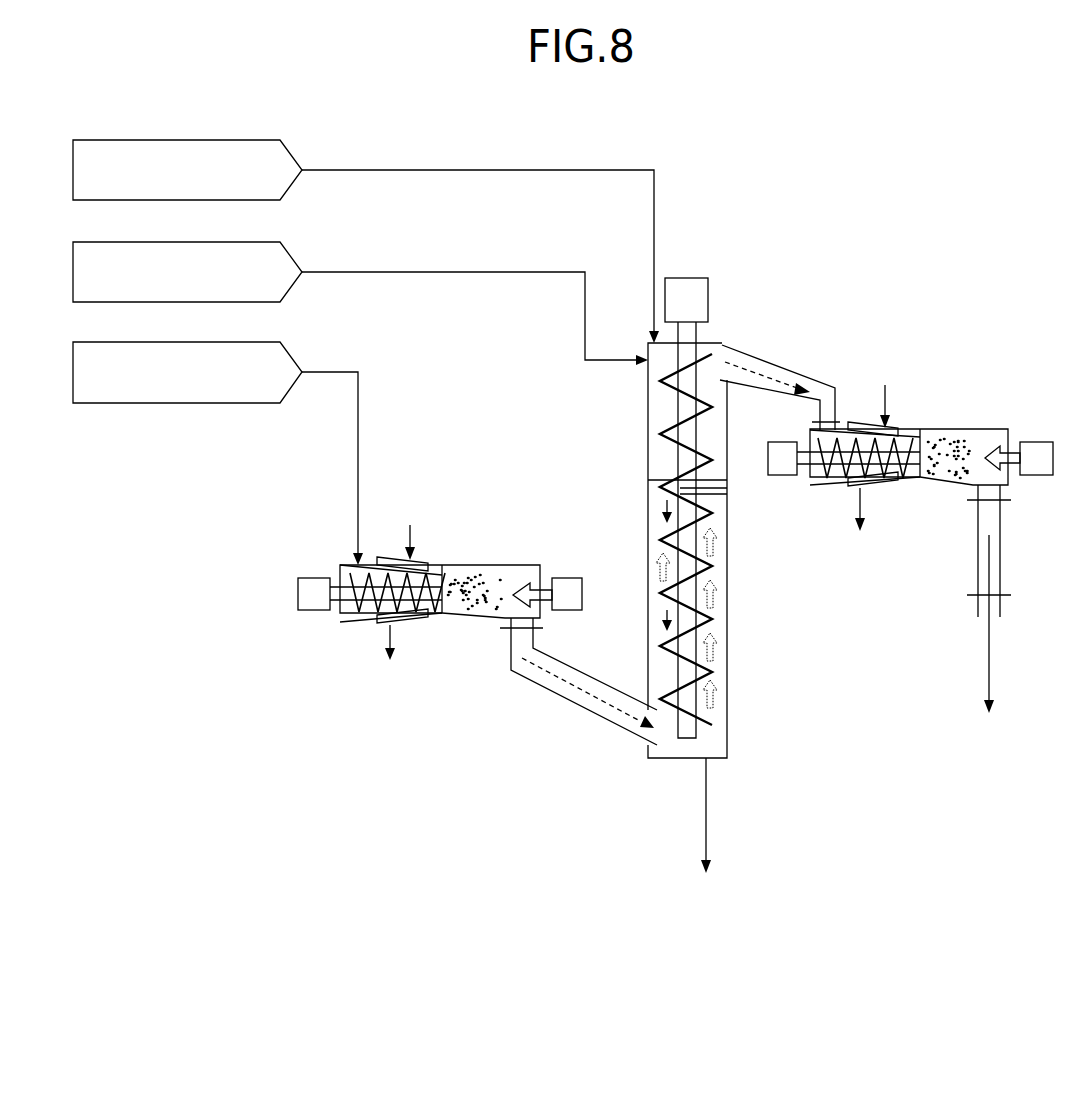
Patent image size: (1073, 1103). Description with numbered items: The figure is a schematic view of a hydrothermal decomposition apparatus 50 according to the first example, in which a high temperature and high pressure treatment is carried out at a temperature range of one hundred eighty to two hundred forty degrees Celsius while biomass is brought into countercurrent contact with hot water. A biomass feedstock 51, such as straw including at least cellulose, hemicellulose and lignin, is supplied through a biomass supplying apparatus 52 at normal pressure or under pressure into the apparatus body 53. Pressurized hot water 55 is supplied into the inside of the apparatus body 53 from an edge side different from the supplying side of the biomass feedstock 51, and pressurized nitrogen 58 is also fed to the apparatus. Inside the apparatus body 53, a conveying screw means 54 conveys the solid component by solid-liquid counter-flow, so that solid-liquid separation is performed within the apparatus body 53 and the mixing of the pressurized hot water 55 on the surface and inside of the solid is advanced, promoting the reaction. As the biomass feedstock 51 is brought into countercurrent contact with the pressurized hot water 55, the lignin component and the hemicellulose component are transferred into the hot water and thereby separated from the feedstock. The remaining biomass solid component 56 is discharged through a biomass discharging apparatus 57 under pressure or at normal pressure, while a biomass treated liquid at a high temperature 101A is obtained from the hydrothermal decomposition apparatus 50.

The hydrothermal decomposition apparatus 50 is at (858, 233).
The biomass feedstock 51 is at (241, 342).
The biomass supplying apparatus 52 is at (315, 548).
The apparatus body 53 is at (728, 655).
The conveying screw means 54 is at (708, 356).
The pressurized hot water 55 is at (241, 242).
The biomass solid component 56 is at (780, 381).
The biomass discharging apparatus 57 is at (945, 398).
The pressurized nitrogen 58 is at (241, 140).
The biomass treated liquid at a high temperature 101A is at (703, 834).